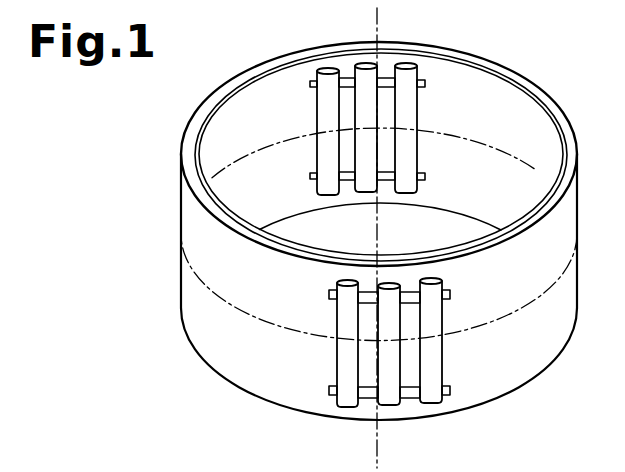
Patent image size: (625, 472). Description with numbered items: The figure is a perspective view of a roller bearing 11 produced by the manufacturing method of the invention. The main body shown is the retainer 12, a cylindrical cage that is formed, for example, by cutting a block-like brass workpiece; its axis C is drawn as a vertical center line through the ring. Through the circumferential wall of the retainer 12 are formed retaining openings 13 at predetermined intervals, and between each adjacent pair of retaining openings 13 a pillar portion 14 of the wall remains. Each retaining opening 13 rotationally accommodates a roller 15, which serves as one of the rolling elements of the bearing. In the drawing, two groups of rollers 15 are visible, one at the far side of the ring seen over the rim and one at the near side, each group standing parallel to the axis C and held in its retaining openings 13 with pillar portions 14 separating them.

The roller bearing 11 is at (449, 48).
The retainer 12 is at (515, 63).
The retaining opening 13 is at (370, 183).
The pillar portion 14 is at (349, 150).
The roller 15 is at (368, 71).
The axis C is at (379, 22).